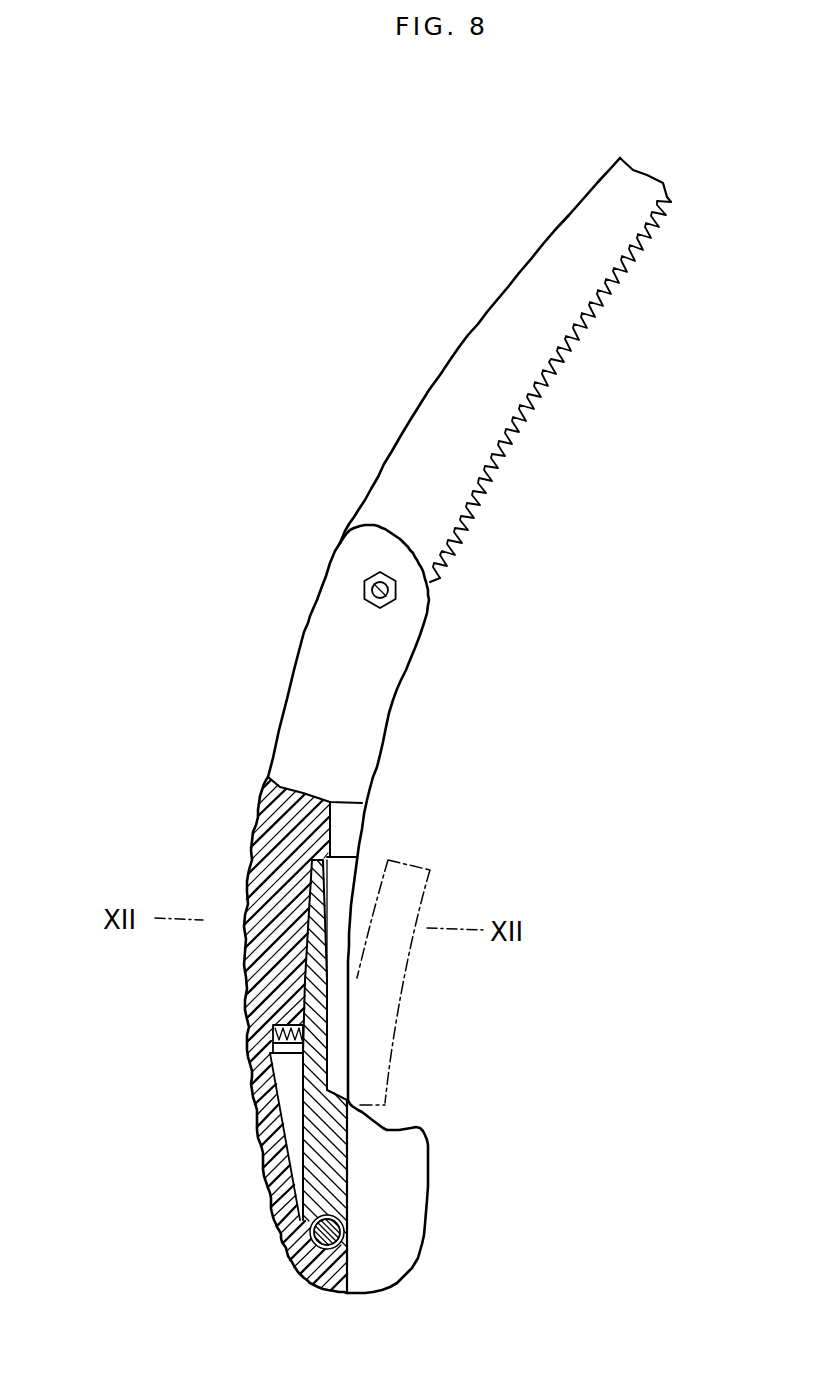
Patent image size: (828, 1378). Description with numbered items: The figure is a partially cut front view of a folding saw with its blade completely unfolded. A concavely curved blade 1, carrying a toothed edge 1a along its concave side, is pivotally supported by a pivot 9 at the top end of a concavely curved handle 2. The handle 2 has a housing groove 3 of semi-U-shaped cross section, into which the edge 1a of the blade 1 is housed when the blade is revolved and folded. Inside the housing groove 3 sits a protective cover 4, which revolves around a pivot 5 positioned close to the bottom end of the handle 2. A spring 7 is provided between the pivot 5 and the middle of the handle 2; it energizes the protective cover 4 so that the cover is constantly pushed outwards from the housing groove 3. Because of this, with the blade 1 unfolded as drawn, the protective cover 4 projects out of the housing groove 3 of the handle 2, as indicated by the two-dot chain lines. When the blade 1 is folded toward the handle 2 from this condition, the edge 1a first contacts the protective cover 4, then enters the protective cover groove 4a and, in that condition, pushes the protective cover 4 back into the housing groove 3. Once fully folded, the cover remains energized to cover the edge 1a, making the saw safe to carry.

The blade 1 is at (435, 437).
The edge 1a is at (513, 442).
The handle 2 is at (298, 732).
The housing groove 3 is at (345, 842).
The protective cover 4 is at (317, 1083).
The protective cover groove 4a is at (338, 1043).
The pivot 5 is at (315, 1232).
The spring 7 is at (273, 1030).
The pivot 9 is at (370, 580).